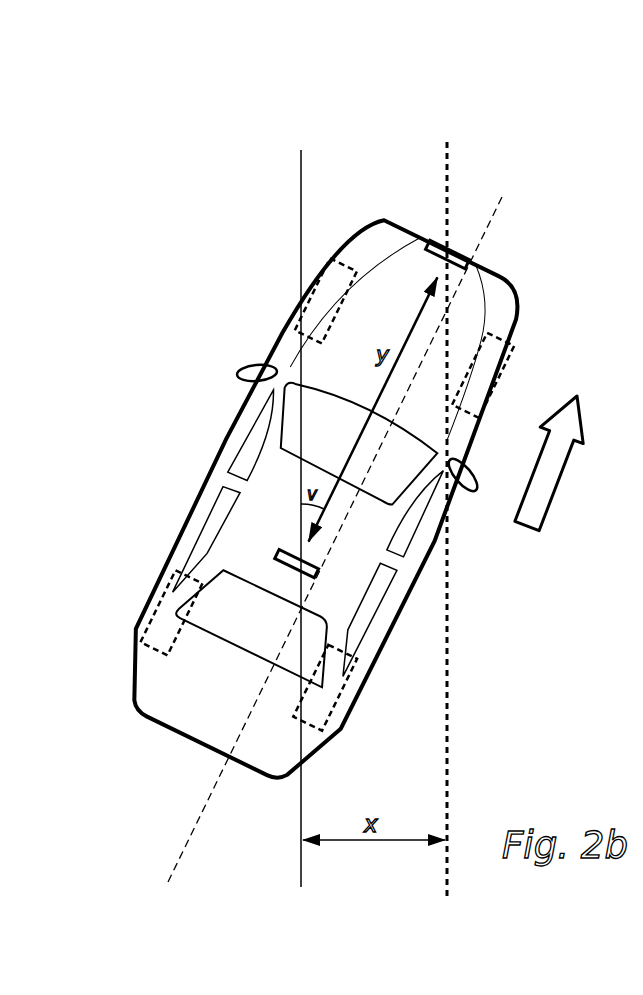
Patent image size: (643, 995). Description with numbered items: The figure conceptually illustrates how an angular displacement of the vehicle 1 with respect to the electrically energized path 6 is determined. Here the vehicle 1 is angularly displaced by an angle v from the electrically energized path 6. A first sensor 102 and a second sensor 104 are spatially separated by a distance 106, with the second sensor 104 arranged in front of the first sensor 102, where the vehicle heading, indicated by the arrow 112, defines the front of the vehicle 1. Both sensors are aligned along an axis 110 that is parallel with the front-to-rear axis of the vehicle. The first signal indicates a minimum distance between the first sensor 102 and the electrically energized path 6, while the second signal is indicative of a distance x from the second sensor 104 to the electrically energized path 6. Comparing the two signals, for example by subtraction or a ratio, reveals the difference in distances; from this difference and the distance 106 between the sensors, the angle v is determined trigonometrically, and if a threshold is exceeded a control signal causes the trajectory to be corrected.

The vehicle 1 is at (177, 296).
The electrically energized path 6 is at (299, 161).
The first sensor 102 is at (284, 573).
The second sensor 104 is at (455, 247).
The distance 106 is at (344, 440).
The axis 110 is at (502, 200).
The arrow 112 is at (560, 480).